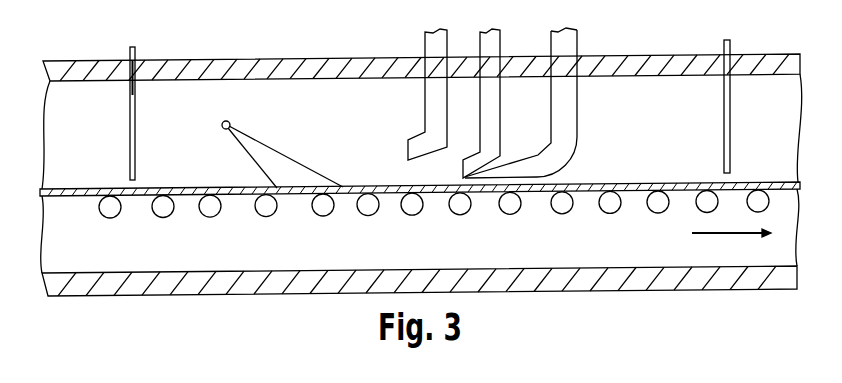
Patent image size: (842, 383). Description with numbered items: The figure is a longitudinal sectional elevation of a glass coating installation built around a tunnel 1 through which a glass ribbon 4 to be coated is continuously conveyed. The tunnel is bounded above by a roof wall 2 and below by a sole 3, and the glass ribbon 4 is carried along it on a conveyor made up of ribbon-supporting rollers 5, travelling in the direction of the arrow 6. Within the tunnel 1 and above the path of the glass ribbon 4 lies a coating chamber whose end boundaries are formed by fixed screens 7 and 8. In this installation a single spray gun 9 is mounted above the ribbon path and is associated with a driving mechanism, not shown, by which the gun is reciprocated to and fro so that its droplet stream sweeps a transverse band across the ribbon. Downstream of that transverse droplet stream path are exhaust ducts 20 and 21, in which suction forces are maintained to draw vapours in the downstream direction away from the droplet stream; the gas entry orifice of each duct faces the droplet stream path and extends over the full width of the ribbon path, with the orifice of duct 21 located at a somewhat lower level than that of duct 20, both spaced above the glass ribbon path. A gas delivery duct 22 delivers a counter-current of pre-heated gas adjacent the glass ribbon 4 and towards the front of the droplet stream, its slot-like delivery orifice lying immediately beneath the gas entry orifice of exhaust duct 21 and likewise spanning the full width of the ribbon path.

The tunnel 1 is at (357, 254).
The roof wall 2 is at (636, 62).
The sole 3 is at (580, 279).
The glass ribbon 4 is at (745, 193).
The ribbon-supporting rollers 5 is at (560, 206).
The arrow 6 is at (700, 236).
The fixed screen 7 is at (140, 70).
The fixed screen 8 is at (731, 47).
The spray gun 9 is at (228, 118).
The exhaust duct 20 is at (433, 59).
The exhaust duct 21 is at (493, 67).
The gas delivery duct 22 is at (568, 85).